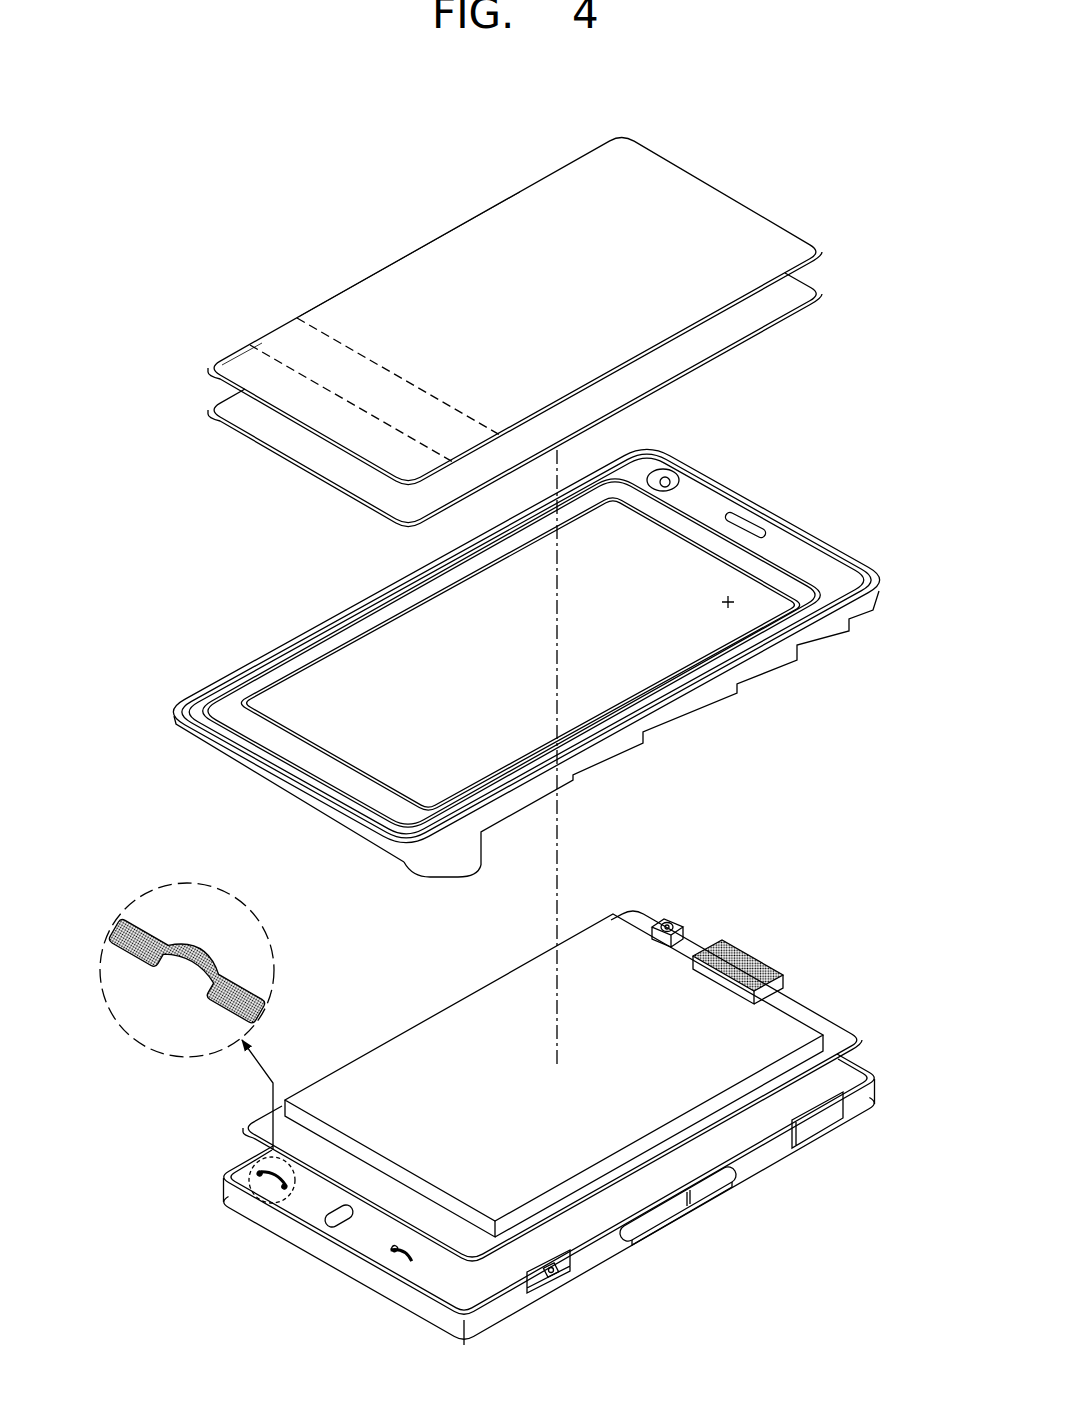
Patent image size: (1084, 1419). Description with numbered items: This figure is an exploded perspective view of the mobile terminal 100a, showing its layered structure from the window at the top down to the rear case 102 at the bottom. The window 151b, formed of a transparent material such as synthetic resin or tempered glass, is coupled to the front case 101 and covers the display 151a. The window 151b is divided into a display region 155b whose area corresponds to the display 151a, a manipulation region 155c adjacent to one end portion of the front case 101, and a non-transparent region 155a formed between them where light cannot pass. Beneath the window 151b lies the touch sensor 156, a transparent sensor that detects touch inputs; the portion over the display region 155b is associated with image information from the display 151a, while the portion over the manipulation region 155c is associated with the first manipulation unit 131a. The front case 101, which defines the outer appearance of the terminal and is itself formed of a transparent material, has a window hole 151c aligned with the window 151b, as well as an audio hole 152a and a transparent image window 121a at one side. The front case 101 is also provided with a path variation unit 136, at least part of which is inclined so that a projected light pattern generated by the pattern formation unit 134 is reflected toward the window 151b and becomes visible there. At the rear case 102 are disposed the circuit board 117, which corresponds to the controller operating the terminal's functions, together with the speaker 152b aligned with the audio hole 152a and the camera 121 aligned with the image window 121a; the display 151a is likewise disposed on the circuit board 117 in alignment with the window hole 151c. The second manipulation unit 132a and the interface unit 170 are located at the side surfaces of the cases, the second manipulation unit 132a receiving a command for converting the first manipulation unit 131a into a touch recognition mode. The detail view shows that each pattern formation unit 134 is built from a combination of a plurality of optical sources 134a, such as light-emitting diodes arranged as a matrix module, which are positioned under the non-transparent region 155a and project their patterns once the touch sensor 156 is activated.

The mobile terminal 100a is at (296, 204).
The window 151b is at (460, 214).
The display region 155b is at (418, 262).
The non-transparent region 155a is at (290, 333).
The manipulation region 155c is at (240, 364).
The touch sensor 156 is at (305, 461).
The front case 101 is at (880, 606).
The first manipulation unit 131a is at (231, 717).
The window hole 151c is at (732, 597).
The image window 121a is at (668, 484).
The audio hole 152a is at (747, 520).
The path variation unit 136 is at (415, 864).
The display 151a is at (412, 1042).
The circuit board 117 is at (805, 1010).
The camera 121 is at (670, 921).
The speaker 152b is at (750, 960).
The rear case 102 is at (770, 1163).
The second manipulation unit 132a is at (665, 1215).
The interface unit 170 is at (817, 1123).
The pattern formation unit 134 is at (166, 924).
The optical source 134a is at (127, 928).